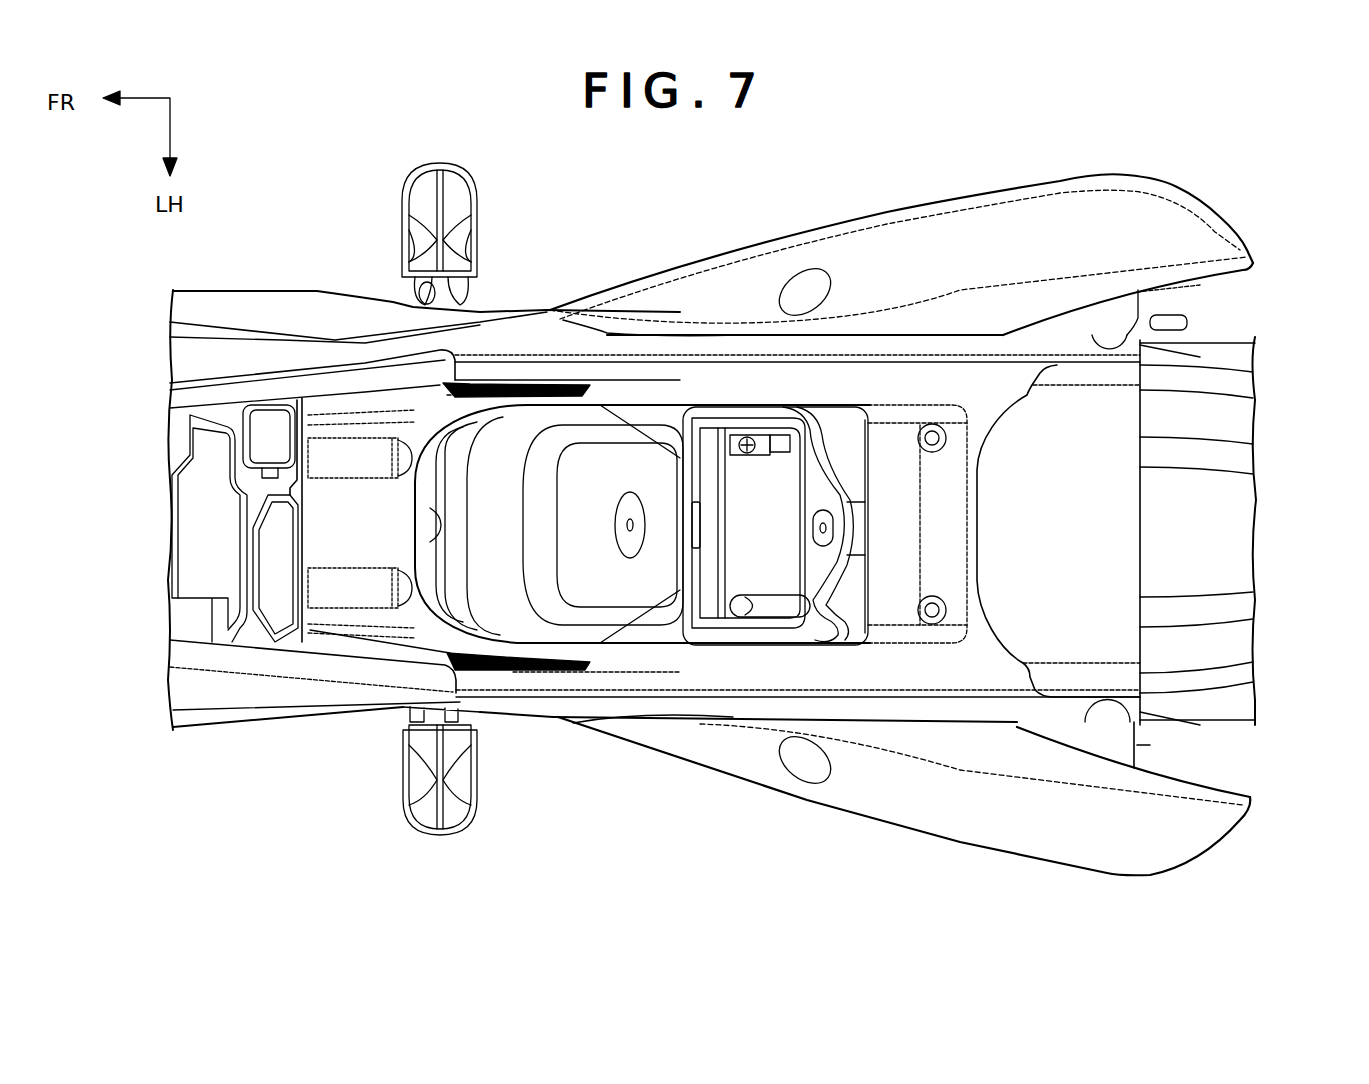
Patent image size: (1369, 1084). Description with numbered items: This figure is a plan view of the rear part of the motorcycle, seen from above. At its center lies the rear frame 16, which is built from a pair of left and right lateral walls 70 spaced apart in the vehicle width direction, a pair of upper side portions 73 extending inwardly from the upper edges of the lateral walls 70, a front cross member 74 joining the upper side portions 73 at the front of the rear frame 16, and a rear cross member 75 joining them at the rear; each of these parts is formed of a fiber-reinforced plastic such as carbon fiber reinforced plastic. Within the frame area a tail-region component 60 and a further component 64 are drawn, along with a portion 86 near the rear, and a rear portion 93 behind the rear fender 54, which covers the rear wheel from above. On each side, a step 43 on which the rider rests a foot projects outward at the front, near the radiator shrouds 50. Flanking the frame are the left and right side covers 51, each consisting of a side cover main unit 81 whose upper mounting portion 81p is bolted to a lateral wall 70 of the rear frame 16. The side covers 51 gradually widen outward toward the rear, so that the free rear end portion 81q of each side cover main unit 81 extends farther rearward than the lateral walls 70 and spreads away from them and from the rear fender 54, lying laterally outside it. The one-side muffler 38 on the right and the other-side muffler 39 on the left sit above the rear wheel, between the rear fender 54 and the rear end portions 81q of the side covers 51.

The rear frame 16 is at (548, 312).
The one-side muffler 38 is at (1138, 318).
The other-side muffler 39 is at (1137, 742).
The steps 43 is at (420, 170).
The radiator shrouds 50 is at (180, 363).
The side covers 51 is at (888, 212).
The rear fender 54 is at (1255, 355).
The tail lamp 60 is at (515, 605).
The license plate light unit 64 is at (743, 560).
The lateral walls 70 is at (622, 348).
The upper side portions 73 is at (750, 375).
The front cross member 74 is at (365, 512).
The rear cross member 75 is at (898, 600).
The side cover main unit 81 is at (980, 240).
The upper mounting portion 81p is at (805, 275).
The rear end portion 81q is at (1240, 235).
The hook portion 86 is at (1105, 350).
The fender extension 93 is at (1230, 420).